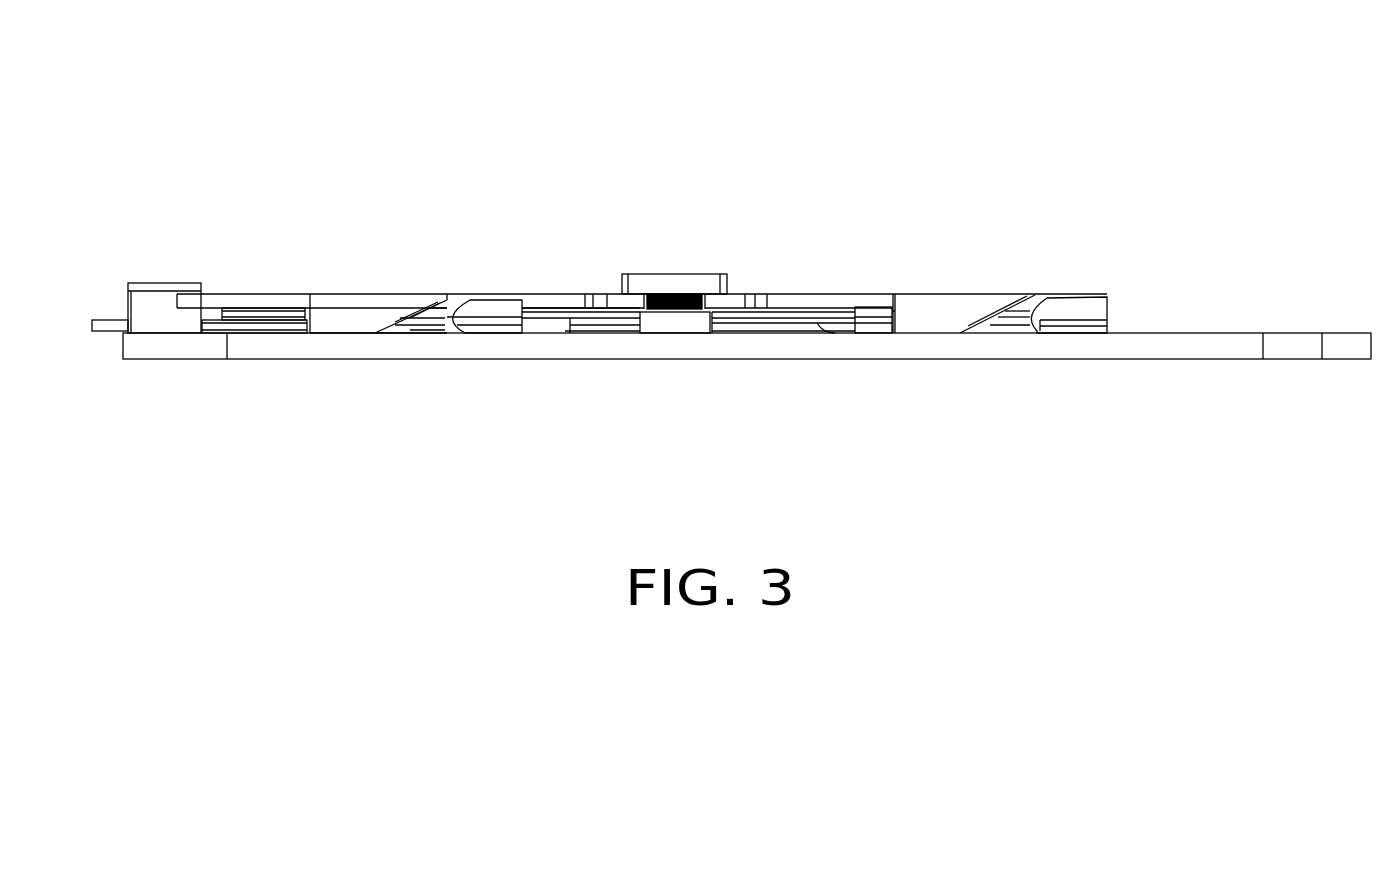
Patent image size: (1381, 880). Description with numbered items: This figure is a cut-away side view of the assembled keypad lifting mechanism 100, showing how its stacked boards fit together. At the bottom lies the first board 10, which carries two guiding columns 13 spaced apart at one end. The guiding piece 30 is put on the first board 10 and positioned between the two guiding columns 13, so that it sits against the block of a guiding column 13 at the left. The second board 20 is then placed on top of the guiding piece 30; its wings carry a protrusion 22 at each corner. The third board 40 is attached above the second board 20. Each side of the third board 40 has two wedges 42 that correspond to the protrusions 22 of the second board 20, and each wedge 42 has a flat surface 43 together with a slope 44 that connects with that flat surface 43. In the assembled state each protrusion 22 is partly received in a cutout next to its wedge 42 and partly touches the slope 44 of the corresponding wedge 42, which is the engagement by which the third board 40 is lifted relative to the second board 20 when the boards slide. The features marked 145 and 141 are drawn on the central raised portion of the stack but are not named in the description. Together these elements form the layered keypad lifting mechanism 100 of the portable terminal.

The keypad lifting mechanism 100 is at (495, 70).
The first board 10 is at (1343, 345).
The guiding column 13 is at (157, 302).
The guiding piece 30 is at (87, 320).
The third board 40 is at (233, 300).
The wedge 42 is at (367, 305).
The flat surface 43 is at (333, 338).
The slope 44 is at (427, 312).
The protrusion 22 is at (497, 305).
The protrusion 145 is at (660, 290).
The base portion 141 is at (674, 322).
The second board 20 is at (815, 303).